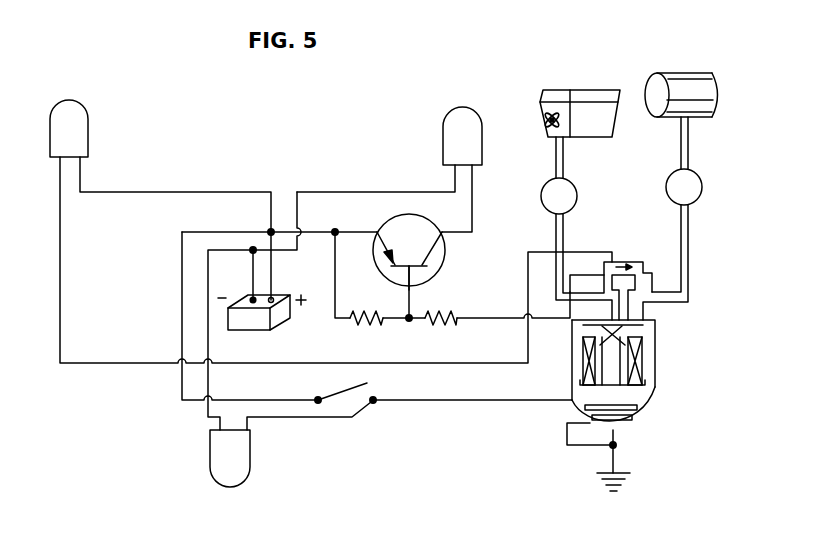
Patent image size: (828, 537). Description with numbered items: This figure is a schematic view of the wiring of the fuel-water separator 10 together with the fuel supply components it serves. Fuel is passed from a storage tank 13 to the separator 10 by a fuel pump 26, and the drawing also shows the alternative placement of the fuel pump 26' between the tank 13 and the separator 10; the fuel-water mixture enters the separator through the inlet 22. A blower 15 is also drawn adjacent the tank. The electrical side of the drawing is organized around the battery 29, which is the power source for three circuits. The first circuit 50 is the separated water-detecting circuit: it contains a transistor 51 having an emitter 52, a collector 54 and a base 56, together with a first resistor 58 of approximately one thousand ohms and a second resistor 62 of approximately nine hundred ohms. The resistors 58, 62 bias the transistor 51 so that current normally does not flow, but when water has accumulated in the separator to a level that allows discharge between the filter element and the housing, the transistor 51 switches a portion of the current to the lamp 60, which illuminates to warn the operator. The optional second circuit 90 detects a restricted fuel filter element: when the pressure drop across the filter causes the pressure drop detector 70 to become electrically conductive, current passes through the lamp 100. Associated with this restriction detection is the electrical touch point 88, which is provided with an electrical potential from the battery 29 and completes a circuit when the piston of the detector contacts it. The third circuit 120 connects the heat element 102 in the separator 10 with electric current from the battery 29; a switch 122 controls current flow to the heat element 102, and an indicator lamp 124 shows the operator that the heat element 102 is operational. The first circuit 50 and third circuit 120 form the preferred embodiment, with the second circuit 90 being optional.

The fuel-water separator 10 is at (633, 405).
The storage tank 13 is at (681, 73).
The blower 15 is at (587, 96).
The inlet 22 is at (676, 305).
The fuel pump 26 is at (570, 184).
The fuel pump 26' is at (669, 178).
The battery 29 is at (247, 329).
The first circuit 50 is at (427, 252).
The transistor 51 is at (441, 268).
The emitter 52 is at (380, 230).
The collector 54 is at (440, 232).
The base 56 is at (407, 288).
The first resistor 58 is at (365, 332).
The lamp 60 is at (471, 102).
The second resistor 62 is at (442, 332).
The pressure drop detector 70 is at (643, 261).
The electrical touch point 88 is at (611, 267).
The second circuit 90 is at (54, 234).
The lamp 100 is at (82, 107).
The heat element 102 is at (637, 417).
The third circuit 120 is at (348, 367).
The switch 122 is at (372, 406).
The indicator lamp 124 is at (250, 476).